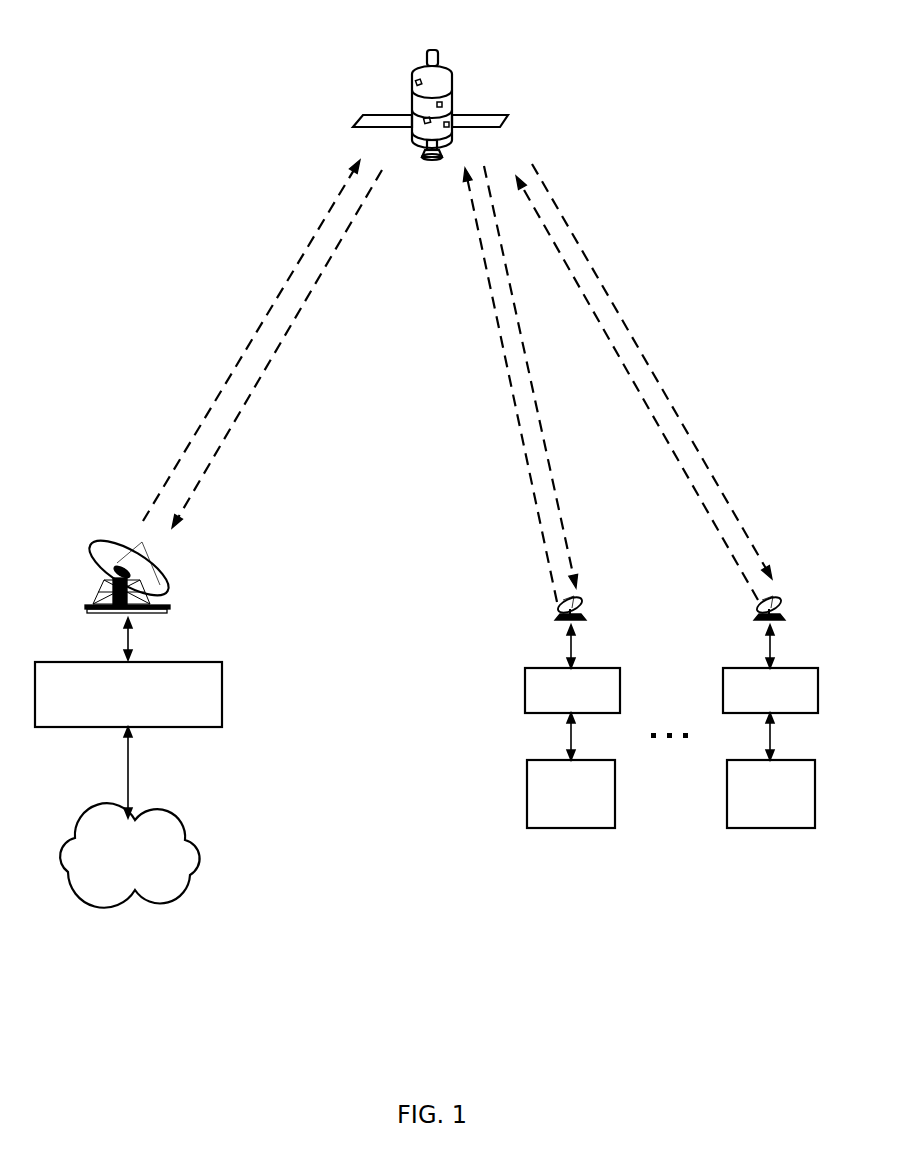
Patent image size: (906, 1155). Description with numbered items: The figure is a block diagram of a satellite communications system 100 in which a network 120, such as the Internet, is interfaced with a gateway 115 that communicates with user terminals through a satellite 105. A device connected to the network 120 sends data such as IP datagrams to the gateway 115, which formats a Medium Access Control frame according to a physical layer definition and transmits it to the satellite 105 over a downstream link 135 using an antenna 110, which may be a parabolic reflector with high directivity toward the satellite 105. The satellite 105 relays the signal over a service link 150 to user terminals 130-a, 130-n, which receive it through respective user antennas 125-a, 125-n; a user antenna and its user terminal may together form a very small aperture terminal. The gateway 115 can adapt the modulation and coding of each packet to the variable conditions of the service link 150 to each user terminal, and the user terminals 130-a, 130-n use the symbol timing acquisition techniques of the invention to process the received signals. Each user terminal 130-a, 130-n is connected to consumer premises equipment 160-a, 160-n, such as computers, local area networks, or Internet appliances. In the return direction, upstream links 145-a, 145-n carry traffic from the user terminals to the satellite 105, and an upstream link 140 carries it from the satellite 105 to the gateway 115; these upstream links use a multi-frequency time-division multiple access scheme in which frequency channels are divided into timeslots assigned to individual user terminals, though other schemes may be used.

The satellite communications system 100 is at (668, 918).
The satellite 105 is at (432, 49).
The antenna 110 is at (165, 588).
The gateway 115 is at (222, 695).
The network 120 is at (203, 860).
The user antenna 125-a is at (557, 609).
The user antenna 125-n is at (756, 609).
The user terminal 130-a is at (525, 687).
The user terminal 130-n is at (723, 687).
The downstream link 135 is at (256, 338).
The upstream link 140 is at (319, 278).
The upstream link 145-a is at (511, 385).
The upstream link 145-n is at (638, 390).
The service link 150 is at (594, 270).
The consumer premises equipment 160-a is at (555, 828).
The consumer premises equipment 160-n is at (755, 828).